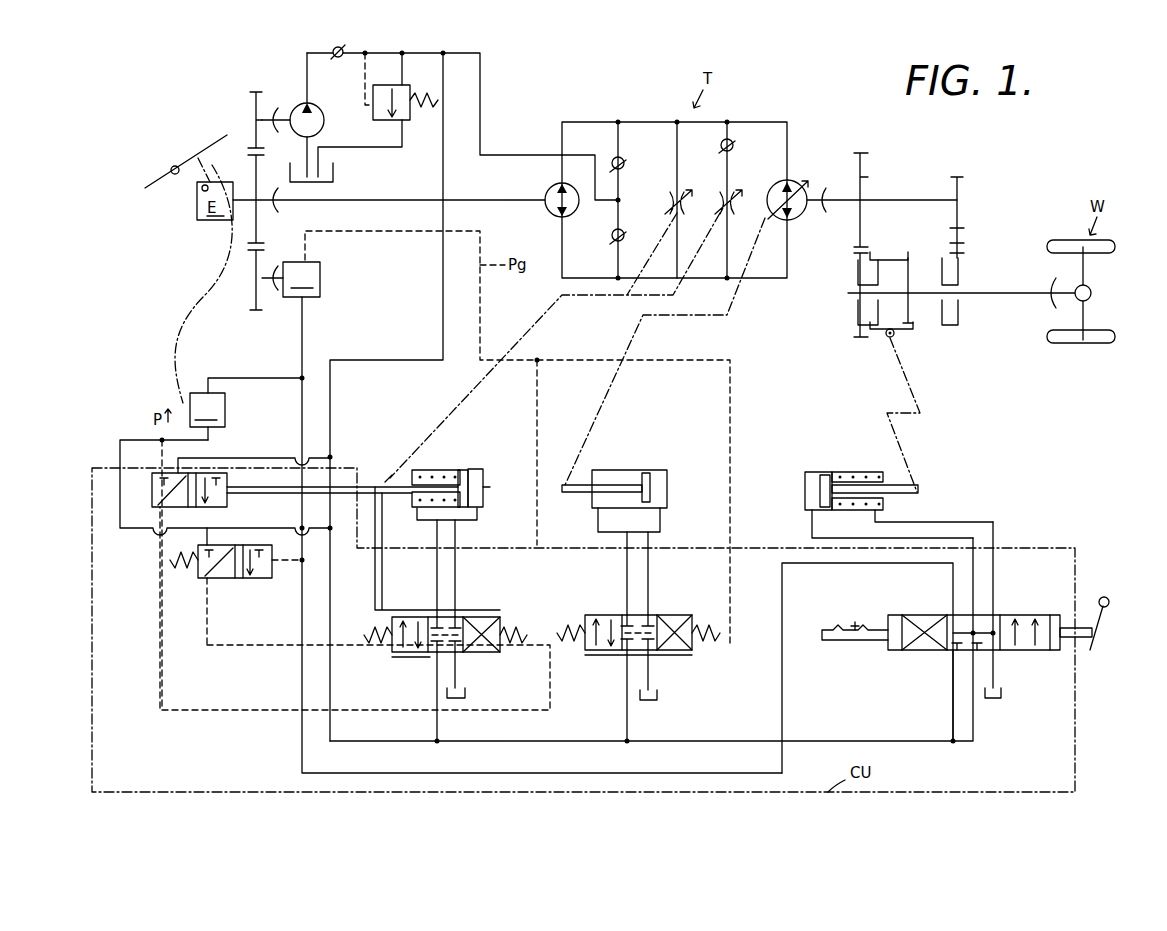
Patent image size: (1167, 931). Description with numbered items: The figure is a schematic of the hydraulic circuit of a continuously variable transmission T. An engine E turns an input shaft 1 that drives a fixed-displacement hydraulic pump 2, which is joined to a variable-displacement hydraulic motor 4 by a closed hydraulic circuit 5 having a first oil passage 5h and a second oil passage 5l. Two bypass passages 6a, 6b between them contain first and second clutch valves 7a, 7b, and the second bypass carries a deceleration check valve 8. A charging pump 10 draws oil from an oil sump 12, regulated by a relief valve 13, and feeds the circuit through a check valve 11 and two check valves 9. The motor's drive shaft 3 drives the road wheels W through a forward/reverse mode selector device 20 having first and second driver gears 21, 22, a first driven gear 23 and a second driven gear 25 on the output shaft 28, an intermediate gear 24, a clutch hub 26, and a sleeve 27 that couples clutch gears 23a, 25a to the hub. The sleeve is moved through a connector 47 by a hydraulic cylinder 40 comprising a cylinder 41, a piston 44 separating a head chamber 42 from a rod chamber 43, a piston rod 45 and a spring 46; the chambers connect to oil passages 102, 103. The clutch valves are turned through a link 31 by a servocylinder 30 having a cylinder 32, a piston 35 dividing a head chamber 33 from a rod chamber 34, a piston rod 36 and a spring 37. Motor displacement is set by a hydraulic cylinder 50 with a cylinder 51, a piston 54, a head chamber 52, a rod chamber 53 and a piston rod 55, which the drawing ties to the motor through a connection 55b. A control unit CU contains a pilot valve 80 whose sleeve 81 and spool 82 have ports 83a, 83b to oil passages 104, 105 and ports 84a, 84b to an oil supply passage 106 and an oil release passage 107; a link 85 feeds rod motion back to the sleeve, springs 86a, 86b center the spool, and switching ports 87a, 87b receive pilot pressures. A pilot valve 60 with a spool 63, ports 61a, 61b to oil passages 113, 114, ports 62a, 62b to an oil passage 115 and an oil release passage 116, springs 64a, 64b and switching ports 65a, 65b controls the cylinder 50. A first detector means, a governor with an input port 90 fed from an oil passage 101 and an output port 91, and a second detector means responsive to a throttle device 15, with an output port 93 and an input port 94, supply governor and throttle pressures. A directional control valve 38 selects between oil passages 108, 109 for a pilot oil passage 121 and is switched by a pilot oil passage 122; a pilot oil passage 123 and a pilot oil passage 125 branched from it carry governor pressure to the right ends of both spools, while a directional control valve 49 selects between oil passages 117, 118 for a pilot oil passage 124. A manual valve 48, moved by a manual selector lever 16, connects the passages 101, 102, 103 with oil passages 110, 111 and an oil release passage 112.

The input shaft 1 is at (415, 200).
The hydraulic pump 2 is at (546, 195).
The drive shaft 3 is at (843, 198).
The hydraulic motor 4 is at (795, 182).
The closed hydraulic circuit 5 is at (790, 140).
The second oil passage 5l is at (595, 122).
The first oil passage 5h is at (590, 278).
The bypass passage 6a is at (672, 165).
The bypass passage 6b is at (732, 165).
The first clutch valve 7a is at (668, 200).
The second clutch valve 7b is at (720, 200).
The deceleration check valve 8 is at (735, 146).
The check valve 9 is at (612, 158).
The charging pump 10 is at (318, 106).
The check valve 11 is at (333, 48).
The oil sump 12 is at (333, 172).
The relief valve 13 is at (373, 108).
The throttle valve opening/closing device 15 is at (198, 141).
The manual selector lever 16 is at (1110, 603).
The forward/reverse mode selector device 20 is at (937, 168).
The first driver gear 21 is at (868, 177).
The second driver gear 22 is at (962, 178).
The first driven gear 23 is at (856, 268).
The clutch gear 23a is at (885, 250).
The intermediate gear 24 is at (965, 236).
The second driven gear 25 is at (960, 312).
The clutch gear 25a is at (965, 255).
The clutch hub 26 is at (910, 255).
The sleeve 27 is at (915, 335).
The output shaft 28 is at (1015, 292).
The servocylinder 30 is at (439, 519).
The link 31 is at (540, 312).
The cylinder 32 is at (485, 491).
The head chamber 33 is at (483, 472).
The rod chamber 34 is at (440, 470).
The piston 35 is at (463, 470).
The piston rod 36 is at (386, 480).
The spring 37 is at (420, 470).
The directional control valve 38 is at (200, 588).
The hydraulic cylinder 40 is at (789, 455).
The cylinder 41 is at (878, 468).
The head chamber 42 is at (805, 485).
The rod chamber 43 is at (862, 472).
The piston 44 is at (822, 472).
The piston rod 45 is at (918, 495).
The spring 46 is at (842, 472).
The connector 47 is at (924, 388).
The manual valve 48 is at (1036, 607).
The directional control valve 49 is at (146, 521).
The hydraulic cylinder 50 is at (634, 519).
The cylinder 51 is at (668, 478).
The head chamber 52 is at (652, 490).
The rod chamber 53 is at (615, 475).
The piston 54 is at (668, 505).
The piston rod 55 is at (580, 493).
The control link 55b is at (650, 323).
The pilot valve 60 is at (657, 639).
The port 61a is at (648, 613).
The port 61b is at (627, 613).
The port 62a is at (627, 657).
The port 62b is at (650, 655).
The spool 63 is at (690, 617).
The spring 64a is at (565, 628).
The spring 64b is at (725, 630).
The switching port 65a is at (590, 656).
The switching port 65b is at (696, 652).
The pilot valve 80 is at (449, 626).
The sleeve 81 is at (392, 658).
The spool 82 is at (481, 634).
The port 83a is at (455, 617).
The port 83b is at (432, 617).
The port 84a is at (432, 655).
The port 84b is at (455, 655).
The link 85 is at (382, 565).
The spring 86a is at (360, 630).
The spring 86b is at (527, 630).
The switching port 87a is at (392, 650).
The switching port 87b is at (500, 650).
The input port 90 is at (310, 297).
The output port 91 is at (314, 262).
The output port 93 is at (215, 432).
The input port 94 is at (208, 385).
The oil passage 101 is at (862, 564).
The oil passage 102 is at (810, 524).
The oil passage 103 is at (875, 516).
The oil passage 104 is at (455, 535).
The oil passage 105 is at (437, 535).
The oil supply passage 106 is at (437, 700).
The oil release passage 107 is at (466, 692).
The oil passage 108 is at (268, 528).
The oil passage 109 is at (120, 445).
The oil passage 110 is at (950, 672).
The oil passage 111 is at (973, 728).
The oil release passage 112 is at (995, 665).
The oil passage 113 is at (648, 562).
The oil passage 114 is at (627, 562).
The oil passage 115 is at (627, 718).
The oil release passage 116 is at (660, 692).
The oil passage 117 is at (268, 458).
The oil passage 118 is at (158, 445).
The pilot oil passage 121 is at (245, 643).
The pilot oil passage 122 is at (290, 565).
The pilot oil passage 123 is at (392, 235).
The pilot oil passage 124 is at (150, 647).
The pilot oil passage 125 is at (734, 364).